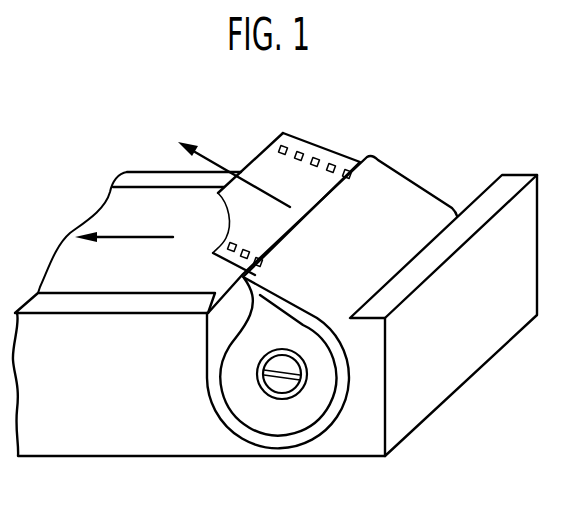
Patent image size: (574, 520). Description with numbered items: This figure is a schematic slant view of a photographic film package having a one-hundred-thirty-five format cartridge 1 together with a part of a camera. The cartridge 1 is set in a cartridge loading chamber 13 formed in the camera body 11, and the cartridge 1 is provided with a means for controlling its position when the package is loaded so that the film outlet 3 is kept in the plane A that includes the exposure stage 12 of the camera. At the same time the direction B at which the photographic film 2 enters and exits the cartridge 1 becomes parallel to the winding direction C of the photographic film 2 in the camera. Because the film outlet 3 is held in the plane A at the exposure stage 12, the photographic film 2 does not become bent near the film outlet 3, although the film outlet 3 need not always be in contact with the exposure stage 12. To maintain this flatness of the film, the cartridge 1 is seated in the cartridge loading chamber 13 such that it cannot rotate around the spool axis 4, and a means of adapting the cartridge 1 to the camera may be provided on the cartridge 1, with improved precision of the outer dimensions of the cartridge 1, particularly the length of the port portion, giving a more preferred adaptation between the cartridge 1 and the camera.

The cartridge 1 is at (405, 188).
The photographic film 2 is at (265, 170).
The film outlet 3 is at (337, 180).
The spool axis 4 is at (287, 382).
The camera body 11 is at (80, 443).
The exposure stage 12 is at (123, 200).
The cartridge loading chamber 13 is at (253, 446).
The plane A is at (142, 178).
The direction at which the film enters and exits the cartridge B is at (215, 167).
The winding direction C is at (131, 238).